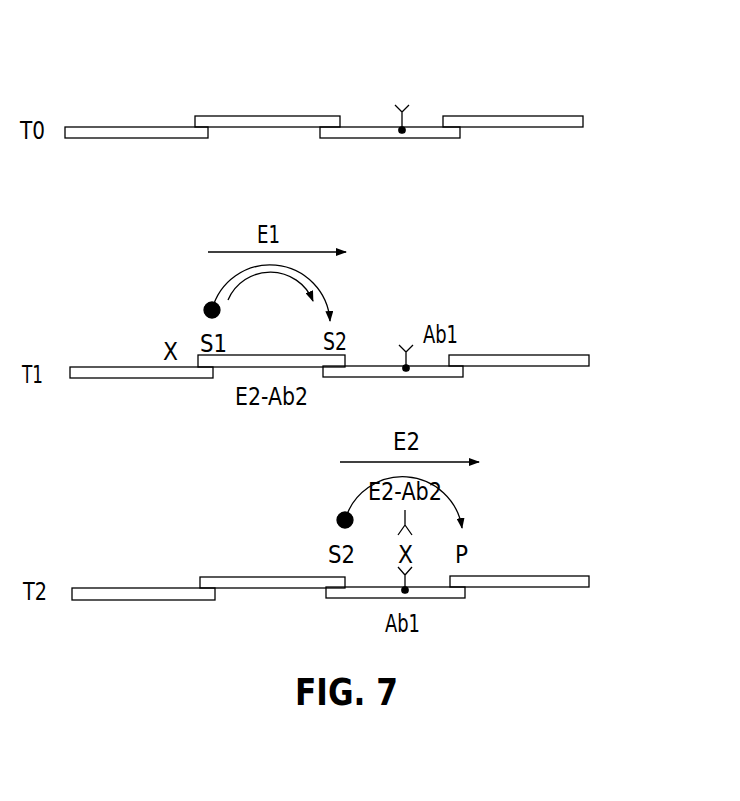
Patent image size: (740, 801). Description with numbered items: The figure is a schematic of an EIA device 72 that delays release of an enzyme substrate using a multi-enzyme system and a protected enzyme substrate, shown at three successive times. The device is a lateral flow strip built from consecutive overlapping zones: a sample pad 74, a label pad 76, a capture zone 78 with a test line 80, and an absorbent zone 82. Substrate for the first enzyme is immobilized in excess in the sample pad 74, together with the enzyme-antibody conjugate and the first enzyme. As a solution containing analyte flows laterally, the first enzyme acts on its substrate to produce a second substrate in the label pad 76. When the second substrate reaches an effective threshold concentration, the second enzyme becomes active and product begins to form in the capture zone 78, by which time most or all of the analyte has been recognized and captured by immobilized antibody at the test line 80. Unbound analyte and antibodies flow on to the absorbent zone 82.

The EIA device 72 is at (346, 116).
The sample pad 74 is at (103, 99).
The label pad 76 is at (253, 99).
The capture zone 78 is at (398, 99).
The test line 80 is at (402, 154).
The absorbent zone 82 is at (517, 132).